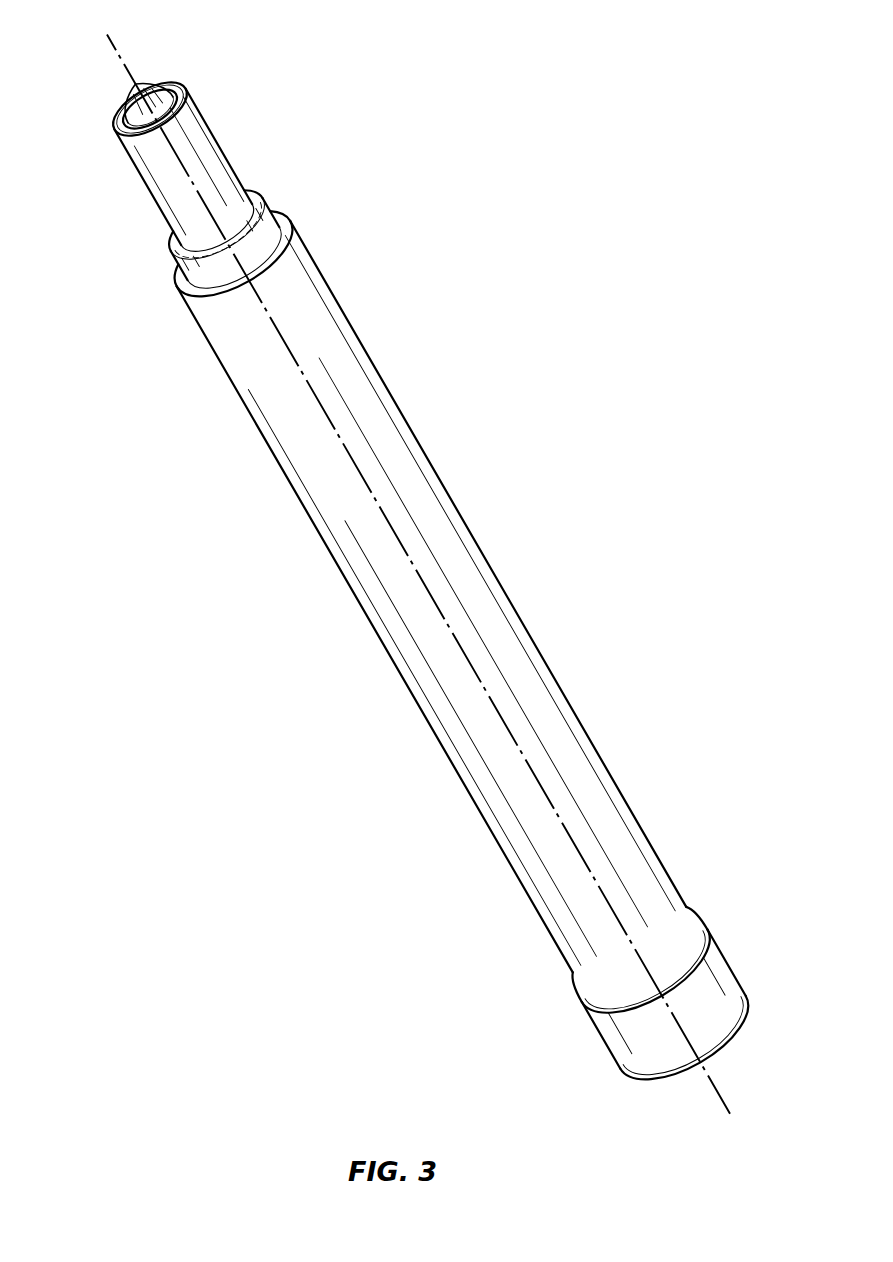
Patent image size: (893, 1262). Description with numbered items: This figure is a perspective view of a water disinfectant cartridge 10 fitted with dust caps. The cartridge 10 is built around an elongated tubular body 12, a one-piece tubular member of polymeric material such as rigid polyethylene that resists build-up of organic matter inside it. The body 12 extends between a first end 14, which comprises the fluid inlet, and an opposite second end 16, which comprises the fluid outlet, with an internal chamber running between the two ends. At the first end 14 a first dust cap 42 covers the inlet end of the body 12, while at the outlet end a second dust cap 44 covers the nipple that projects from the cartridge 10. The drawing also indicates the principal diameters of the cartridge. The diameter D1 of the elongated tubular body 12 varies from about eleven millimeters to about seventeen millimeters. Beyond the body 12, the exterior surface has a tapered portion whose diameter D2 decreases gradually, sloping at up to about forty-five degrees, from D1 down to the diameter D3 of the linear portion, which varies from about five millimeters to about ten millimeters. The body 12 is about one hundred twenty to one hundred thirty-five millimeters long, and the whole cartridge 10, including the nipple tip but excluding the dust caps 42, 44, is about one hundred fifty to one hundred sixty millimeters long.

The cartridge 10 is at (547, 272).
The elongated tubular body 12 is at (357, 598).
The first end 14 is at (566, 961).
The second end 16 is at (188, 308).
The first dust cap 42 is at (608, 1050).
The second dust cap 44 is at (130, 98).
The diameter of elongated tubular body D1 is at (409, 426).
The diameter of tapered portion D2 is at (269, 210).
The diameter of linear portion D3 is at (212, 134).